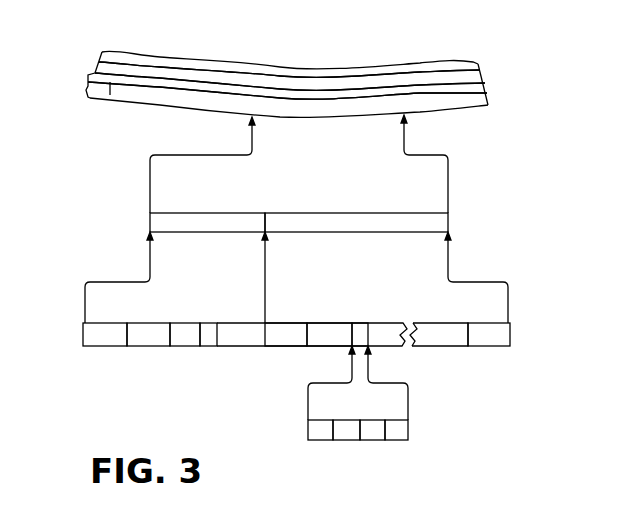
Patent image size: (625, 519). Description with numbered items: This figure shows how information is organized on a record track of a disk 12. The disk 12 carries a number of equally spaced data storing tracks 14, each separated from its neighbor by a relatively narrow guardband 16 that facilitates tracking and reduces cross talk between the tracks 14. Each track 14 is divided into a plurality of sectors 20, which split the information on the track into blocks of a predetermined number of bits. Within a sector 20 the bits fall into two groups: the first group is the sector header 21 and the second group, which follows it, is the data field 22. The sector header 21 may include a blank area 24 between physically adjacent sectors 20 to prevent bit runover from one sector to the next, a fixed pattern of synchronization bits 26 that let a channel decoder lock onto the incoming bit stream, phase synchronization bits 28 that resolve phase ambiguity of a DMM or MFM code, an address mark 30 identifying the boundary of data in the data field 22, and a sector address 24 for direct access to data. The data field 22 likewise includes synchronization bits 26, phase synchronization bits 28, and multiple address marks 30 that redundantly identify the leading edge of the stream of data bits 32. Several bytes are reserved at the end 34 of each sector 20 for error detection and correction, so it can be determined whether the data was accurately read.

The disk 12 is at (448, 60).
The data storing tracks 14 is at (487, 72).
The guardband 16 is at (486, 88).
The sectors 20 is at (163, 102).
The sector header 21 is at (190, 222).
The data field 22 is at (350, 218).
The blank area 24 is at (102, 338).
The synchronization bits 26 is at (153, 337).
The phase synchronization bits 28 is at (188, 338).
The address mark 30 is at (207, 342).
The data bits 32 is at (433, 338).
The end of sector 34 is at (488, 337).